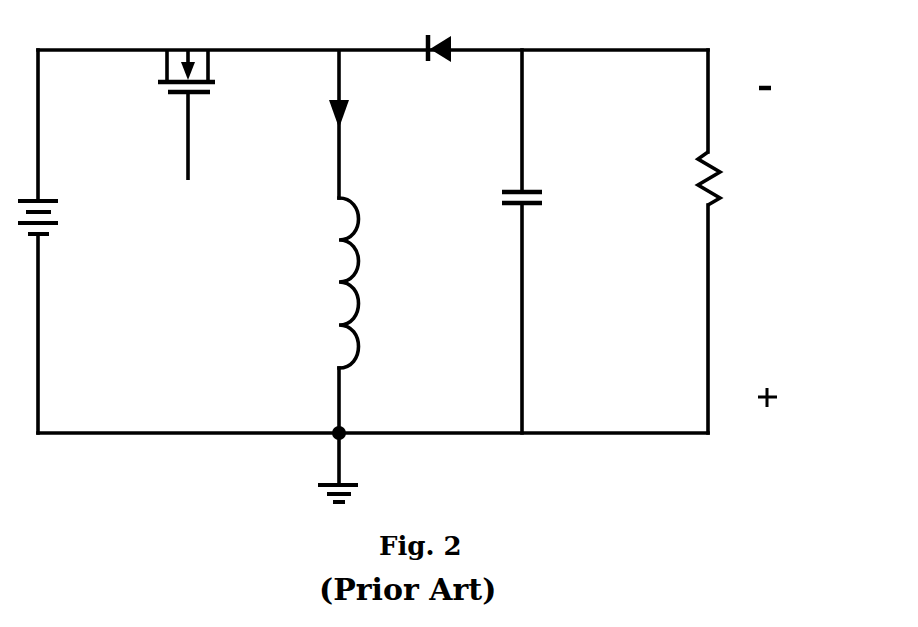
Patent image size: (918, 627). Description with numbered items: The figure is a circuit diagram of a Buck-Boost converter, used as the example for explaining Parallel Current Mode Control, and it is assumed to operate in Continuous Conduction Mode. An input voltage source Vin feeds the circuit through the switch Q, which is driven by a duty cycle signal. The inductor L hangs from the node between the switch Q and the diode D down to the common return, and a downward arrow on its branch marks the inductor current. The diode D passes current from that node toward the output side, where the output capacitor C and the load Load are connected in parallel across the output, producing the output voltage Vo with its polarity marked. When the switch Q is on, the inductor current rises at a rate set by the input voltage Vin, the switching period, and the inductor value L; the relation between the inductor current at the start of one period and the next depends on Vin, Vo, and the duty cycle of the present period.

The switch Q is at (186, 51).
The diode D is at (439, 31).
The inductor L is at (325, 276).
The output capacitor C is at (504, 241).
The input voltage Vin is at (62, 216).
The output voltage Vo is at (777, 247).
The load Load is at (673, 178).